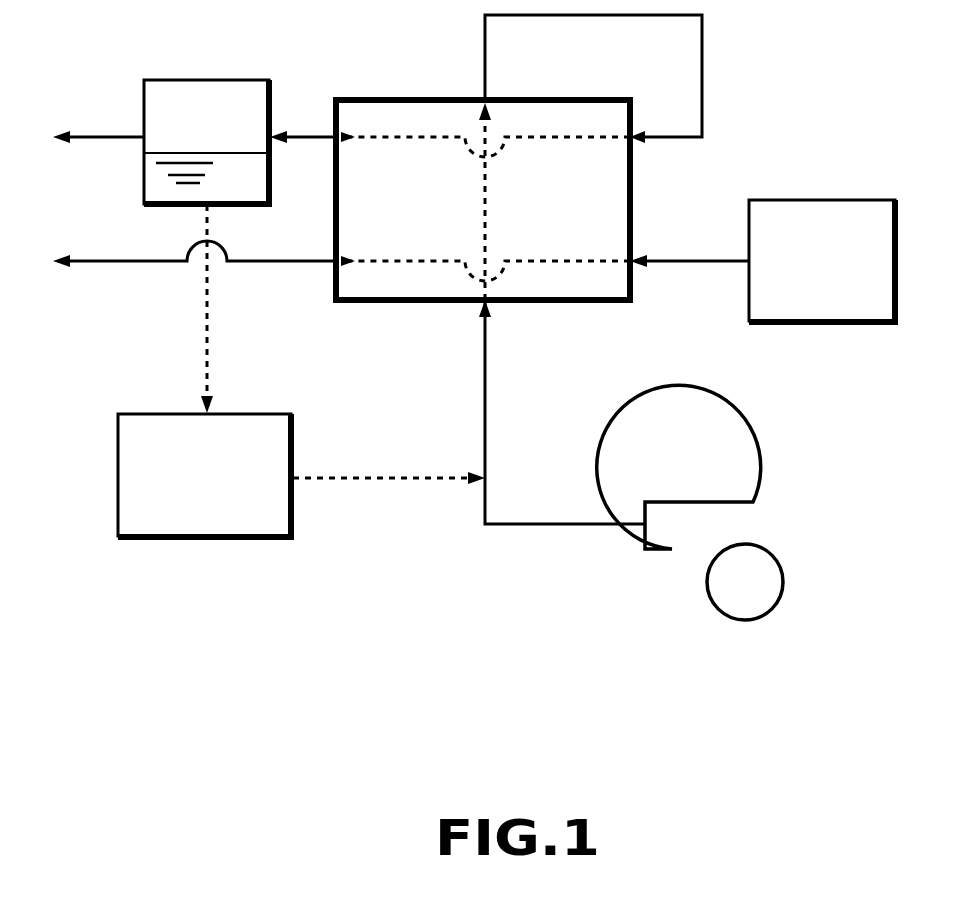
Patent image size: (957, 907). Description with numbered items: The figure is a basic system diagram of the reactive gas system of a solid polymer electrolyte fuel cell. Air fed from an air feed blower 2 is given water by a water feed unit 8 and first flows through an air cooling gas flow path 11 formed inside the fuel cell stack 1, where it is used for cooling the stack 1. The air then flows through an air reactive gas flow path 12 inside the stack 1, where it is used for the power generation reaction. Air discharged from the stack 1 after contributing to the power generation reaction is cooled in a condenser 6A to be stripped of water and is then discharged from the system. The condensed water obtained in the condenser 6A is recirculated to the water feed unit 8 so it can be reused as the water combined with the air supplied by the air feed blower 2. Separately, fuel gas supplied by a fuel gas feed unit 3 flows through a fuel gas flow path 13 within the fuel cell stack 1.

The fuel cell stack 1 is at (407, 97).
The air feed blower 2 is at (728, 645).
The fuel gas feed unit 3 is at (810, 199).
The condenser 6A is at (227, 89).
The water feed unit 8 is at (203, 540).
The air cooling gas flow path 11 is at (487, 140).
The air reactive gas flow path 12 is at (570, 135).
The fuel gas flow path 13 is at (585, 263).